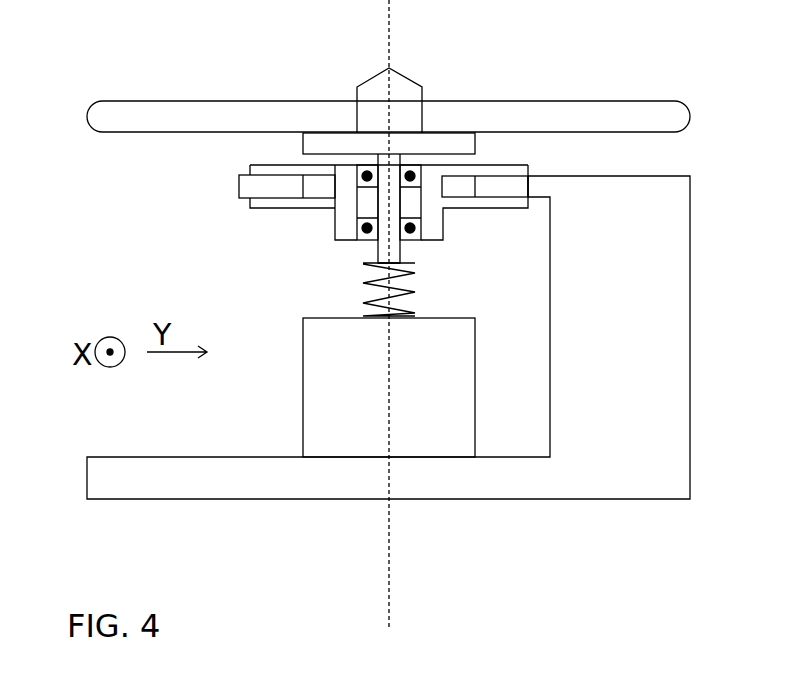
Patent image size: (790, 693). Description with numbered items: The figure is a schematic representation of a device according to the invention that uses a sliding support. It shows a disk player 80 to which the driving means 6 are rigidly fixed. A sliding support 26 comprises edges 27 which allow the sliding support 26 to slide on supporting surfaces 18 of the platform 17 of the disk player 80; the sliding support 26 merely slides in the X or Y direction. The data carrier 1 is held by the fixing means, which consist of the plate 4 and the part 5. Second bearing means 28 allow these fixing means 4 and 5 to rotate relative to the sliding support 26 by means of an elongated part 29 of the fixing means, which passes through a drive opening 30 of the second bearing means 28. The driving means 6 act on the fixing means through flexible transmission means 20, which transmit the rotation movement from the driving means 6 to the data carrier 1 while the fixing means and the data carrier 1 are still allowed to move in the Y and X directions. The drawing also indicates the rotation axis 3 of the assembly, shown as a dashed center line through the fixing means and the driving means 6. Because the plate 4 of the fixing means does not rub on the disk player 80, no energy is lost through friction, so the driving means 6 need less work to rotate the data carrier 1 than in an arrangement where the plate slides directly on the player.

The data carrier 1 is at (635, 119).
The rotation axis 3 is at (390, 579).
The fixing means plate 4 is at (432, 143).
The fixing means part 5 is at (400, 93).
The driving means 6 is at (389, 387).
The platform 17 is at (536, 183).
The supporting surface 18 is at (506, 185).
The flexible transmission means 20 is at (415, 293).
The sliding support 26 is at (283, 152).
The edges 27 is at (260, 168).
The second bearing means 28 is at (357, 235).
The elongated part 29 is at (392, 252).
The drive opening 30 is at (369, 258).
The disk player 80 is at (173, 225).